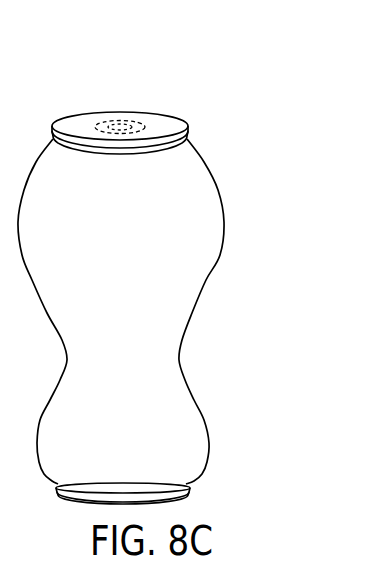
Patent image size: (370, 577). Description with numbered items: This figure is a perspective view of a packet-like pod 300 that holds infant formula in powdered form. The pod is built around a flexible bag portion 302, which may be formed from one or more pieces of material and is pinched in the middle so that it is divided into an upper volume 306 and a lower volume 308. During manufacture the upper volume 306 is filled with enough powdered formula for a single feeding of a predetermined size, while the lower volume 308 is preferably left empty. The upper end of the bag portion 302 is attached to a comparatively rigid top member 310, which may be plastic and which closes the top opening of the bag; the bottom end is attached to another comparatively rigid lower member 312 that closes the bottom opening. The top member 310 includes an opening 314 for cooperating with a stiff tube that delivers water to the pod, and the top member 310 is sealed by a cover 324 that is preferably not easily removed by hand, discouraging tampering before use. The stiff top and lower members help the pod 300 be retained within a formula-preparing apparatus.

The pod 300 is at (231, 147).
The bag portion 302 is at (224, 224).
The upper volume 306 is at (228, 197).
The lower volume 308 is at (211, 420).
The top member 310 is at (188, 125).
The lower member 312 is at (190, 484).
The opening 314 is at (117, 118).
The cover 324 is at (77, 121).